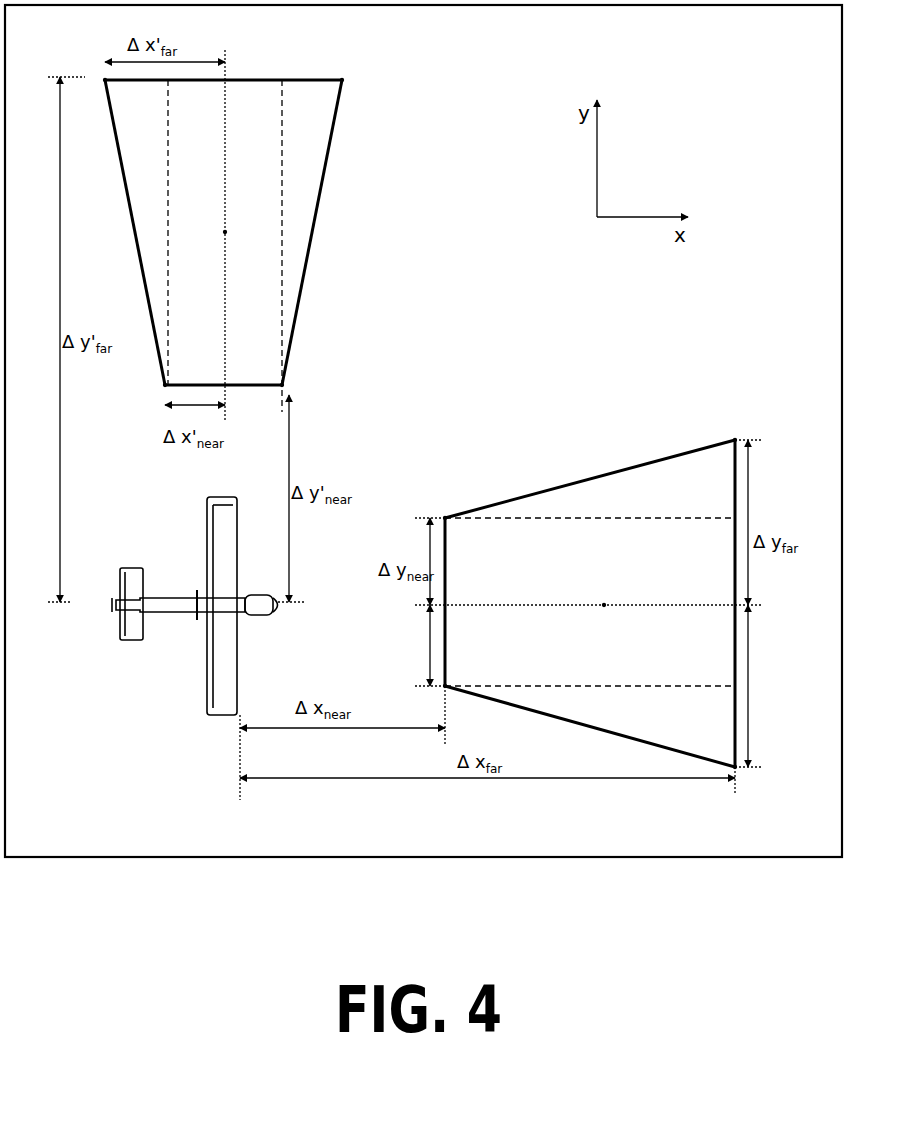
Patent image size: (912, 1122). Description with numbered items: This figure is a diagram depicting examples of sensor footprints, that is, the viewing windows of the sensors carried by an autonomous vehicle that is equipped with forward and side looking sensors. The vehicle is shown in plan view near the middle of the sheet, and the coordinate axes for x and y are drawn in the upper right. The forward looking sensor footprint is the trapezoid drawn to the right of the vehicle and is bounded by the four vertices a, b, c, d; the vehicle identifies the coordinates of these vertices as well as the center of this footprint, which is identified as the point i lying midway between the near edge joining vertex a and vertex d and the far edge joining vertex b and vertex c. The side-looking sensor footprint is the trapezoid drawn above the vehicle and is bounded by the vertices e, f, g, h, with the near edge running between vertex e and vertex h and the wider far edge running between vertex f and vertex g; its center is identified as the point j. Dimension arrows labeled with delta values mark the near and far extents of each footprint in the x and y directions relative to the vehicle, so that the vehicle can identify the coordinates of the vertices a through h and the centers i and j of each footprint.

The vertex of forward looking sensor footprint a is at (448, 505).
The vertex of forward looking sensor footprint b is at (738, 423).
The vertex of forward looking sensor footprint c is at (740, 784).
The vertex of forward looking sensor footprint d is at (453, 705).
The vertex of side-looking sensor footprint e is at (151, 392).
The vertex of side-looking sensor footprint f is at (93, 75).
The vertex of side-looking sensor footprint g is at (356, 77).
The vertex of side-looking sensor footprint h is at (298, 390).
The center of forward looking sensor footprint i is at (604, 605).
The center of side-looking sensor footprint j is at (225, 220).